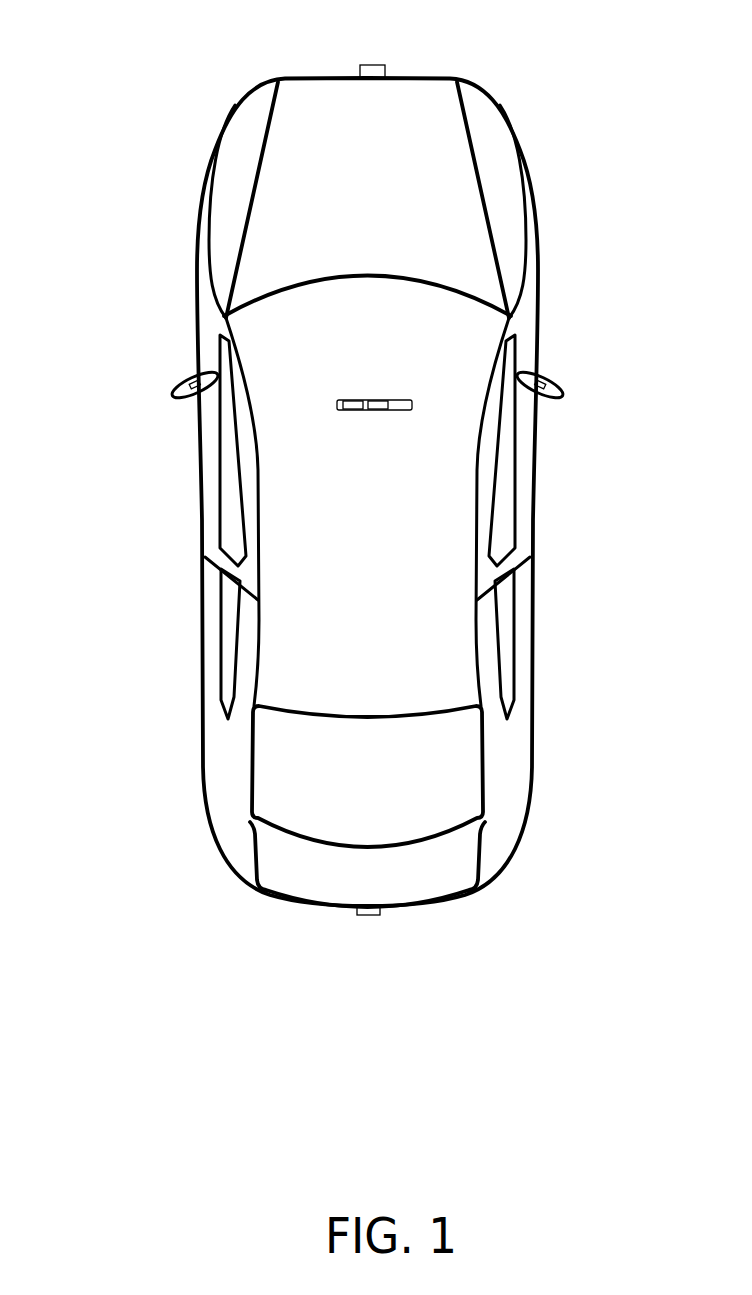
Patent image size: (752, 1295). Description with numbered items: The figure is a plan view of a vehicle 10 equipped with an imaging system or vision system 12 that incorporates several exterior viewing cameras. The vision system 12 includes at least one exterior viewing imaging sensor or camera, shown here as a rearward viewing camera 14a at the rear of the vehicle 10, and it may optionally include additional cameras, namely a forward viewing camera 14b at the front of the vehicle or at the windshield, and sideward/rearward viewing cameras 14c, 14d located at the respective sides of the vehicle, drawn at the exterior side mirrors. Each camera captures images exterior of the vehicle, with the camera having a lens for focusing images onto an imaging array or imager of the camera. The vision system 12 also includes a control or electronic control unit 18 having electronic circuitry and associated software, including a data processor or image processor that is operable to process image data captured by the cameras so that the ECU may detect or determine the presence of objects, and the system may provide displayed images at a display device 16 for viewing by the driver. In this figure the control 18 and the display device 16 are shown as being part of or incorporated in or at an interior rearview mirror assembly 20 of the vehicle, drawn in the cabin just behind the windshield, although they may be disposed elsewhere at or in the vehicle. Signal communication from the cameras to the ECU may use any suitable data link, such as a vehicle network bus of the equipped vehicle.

The vehicle 10 is at (135, 90).
The vision system 12 is at (331, 922).
The rearward viewing camera 14a is at (373, 915).
The forward viewing camera 14b is at (376, 65).
The sideward/rearward viewing camera 14c is at (182, 380).
The sideward/rearward viewing camera 14d is at (552, 377).
The display device 16 is at (349, 400).
The electronic control unit 18 is at (371, 400).
The interior rearview mirror assembly 20 is at (411, 400).